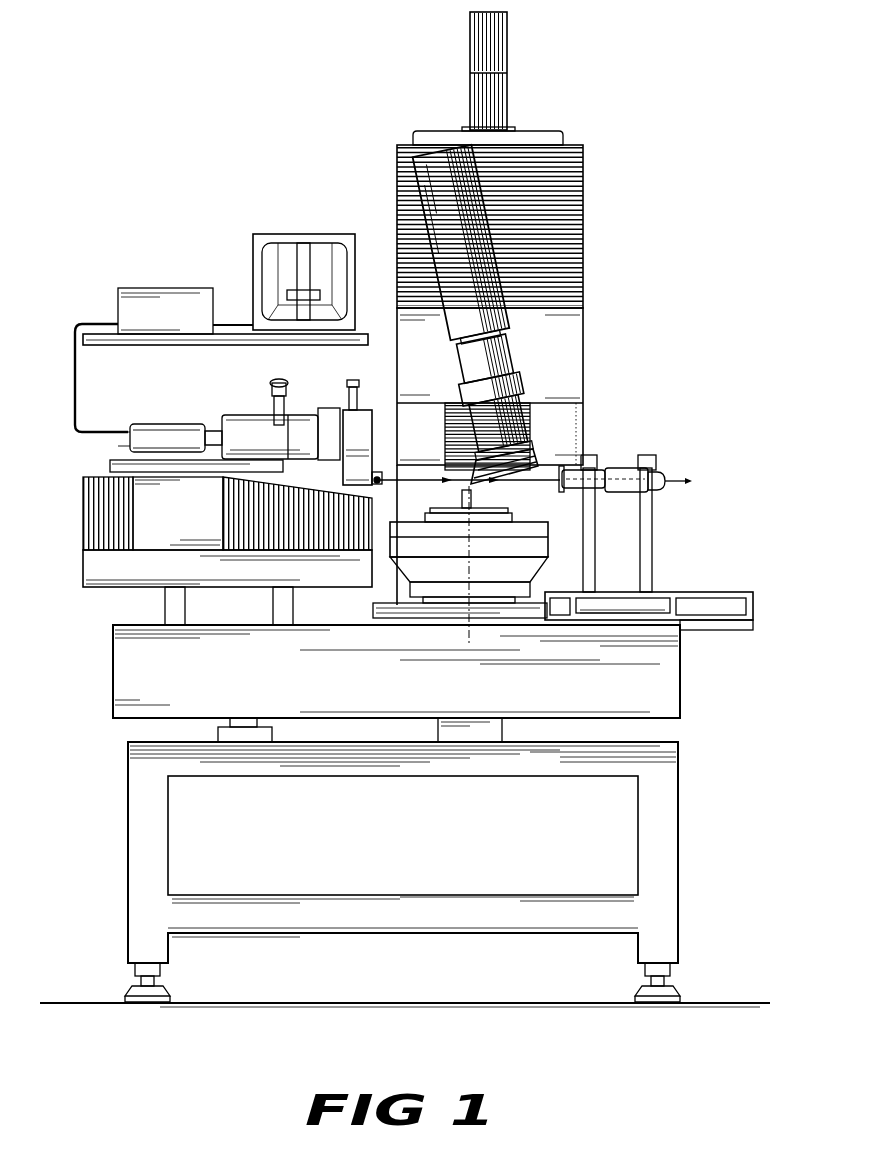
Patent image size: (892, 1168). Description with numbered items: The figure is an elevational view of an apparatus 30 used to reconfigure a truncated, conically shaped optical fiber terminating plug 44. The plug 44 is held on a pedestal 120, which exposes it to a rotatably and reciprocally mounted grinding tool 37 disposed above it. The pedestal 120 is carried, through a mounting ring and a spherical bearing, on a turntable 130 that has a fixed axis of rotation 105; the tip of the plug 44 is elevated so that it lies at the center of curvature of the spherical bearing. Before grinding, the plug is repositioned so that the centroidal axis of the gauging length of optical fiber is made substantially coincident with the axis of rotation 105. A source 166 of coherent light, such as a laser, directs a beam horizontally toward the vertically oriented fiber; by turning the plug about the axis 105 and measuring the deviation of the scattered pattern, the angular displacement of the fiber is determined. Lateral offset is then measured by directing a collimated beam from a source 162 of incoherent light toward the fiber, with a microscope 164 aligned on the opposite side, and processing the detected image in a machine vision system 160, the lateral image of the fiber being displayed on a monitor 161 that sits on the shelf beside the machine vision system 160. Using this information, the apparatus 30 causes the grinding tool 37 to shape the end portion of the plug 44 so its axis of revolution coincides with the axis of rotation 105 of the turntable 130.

The apparatus 30 is at (333, 145).
The grinding tool 37 is at (538, 463).
The plug 44 is at (466, 486).
The axis of rotation 105 is at (468, 633).
The pedestal 120 is at (478, 489).
The turntable 130 is at (550, 552).
The machine vision system 160 is at (158, 266).
The monitor 161 is at (307, 234).
The source of incoherent light 162 is at (600, 470).
The microscope 164 is at (387, 402).
The source of coherent light 166 is at (632, 490).